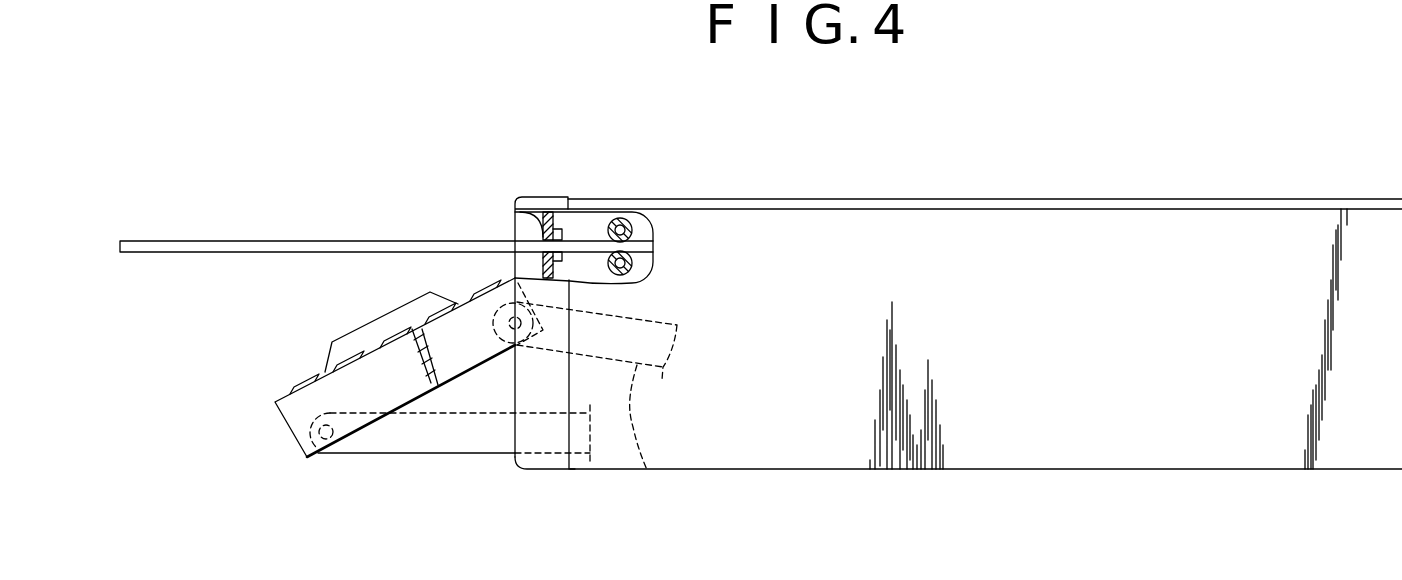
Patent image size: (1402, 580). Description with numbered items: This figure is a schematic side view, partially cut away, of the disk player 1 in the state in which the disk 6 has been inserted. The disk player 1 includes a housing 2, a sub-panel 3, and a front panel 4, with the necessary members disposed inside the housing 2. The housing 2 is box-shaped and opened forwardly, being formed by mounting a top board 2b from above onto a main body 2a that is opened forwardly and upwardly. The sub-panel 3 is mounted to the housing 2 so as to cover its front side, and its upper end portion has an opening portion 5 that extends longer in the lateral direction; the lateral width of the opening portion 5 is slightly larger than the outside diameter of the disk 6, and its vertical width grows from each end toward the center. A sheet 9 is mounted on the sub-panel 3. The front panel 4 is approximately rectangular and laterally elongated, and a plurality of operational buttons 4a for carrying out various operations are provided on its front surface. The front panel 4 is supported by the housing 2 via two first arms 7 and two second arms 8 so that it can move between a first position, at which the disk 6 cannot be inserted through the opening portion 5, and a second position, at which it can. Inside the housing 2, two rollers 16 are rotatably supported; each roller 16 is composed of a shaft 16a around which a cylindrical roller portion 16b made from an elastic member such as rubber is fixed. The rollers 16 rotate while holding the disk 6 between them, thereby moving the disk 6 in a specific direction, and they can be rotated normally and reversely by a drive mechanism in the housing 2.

The disk player 1 is at (1177, 91).
The housing 2 is at (1022, 198).
The main body 2a is at (1042, 470).
The top board 2b is at (1278, 208).
The sub-panel 3 is at (545, 460).
The front panel 4 is at (292, 410).
The operational buttons 4a is at (297, 383).
The opening portion 5 is at (545, 243).
The disk 6 is at (355, 242).
The first arms 7 is at (647, 470).
The second arms 8 is at (408, 437).
The sheet 9 is at (560, 237).
The rollers 16 is at (631, 227).
The shaft 16a is at (612, 218).
The roller portion 16b is at (611, 225).